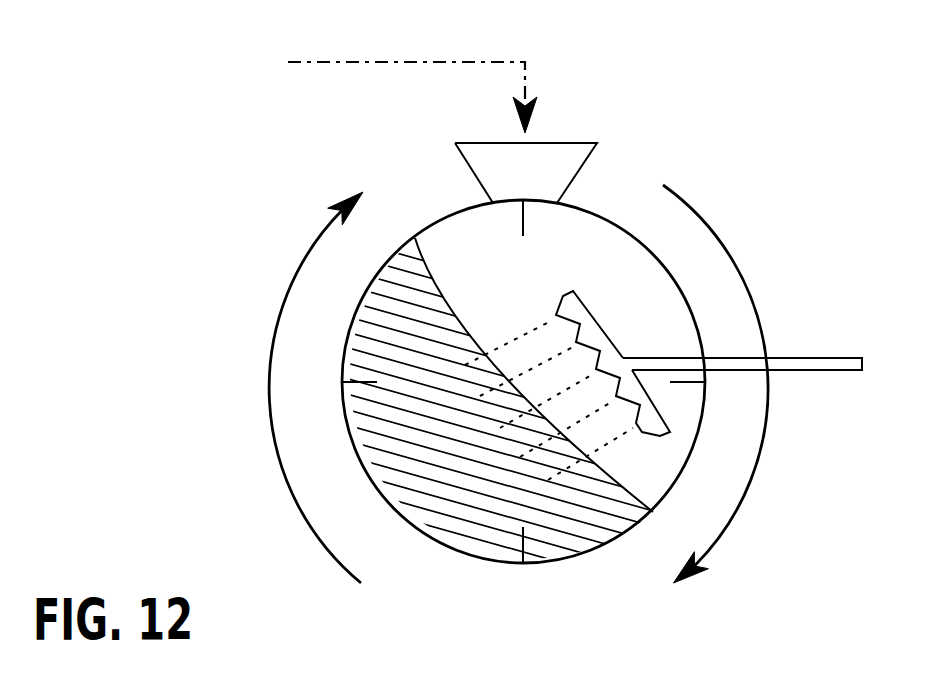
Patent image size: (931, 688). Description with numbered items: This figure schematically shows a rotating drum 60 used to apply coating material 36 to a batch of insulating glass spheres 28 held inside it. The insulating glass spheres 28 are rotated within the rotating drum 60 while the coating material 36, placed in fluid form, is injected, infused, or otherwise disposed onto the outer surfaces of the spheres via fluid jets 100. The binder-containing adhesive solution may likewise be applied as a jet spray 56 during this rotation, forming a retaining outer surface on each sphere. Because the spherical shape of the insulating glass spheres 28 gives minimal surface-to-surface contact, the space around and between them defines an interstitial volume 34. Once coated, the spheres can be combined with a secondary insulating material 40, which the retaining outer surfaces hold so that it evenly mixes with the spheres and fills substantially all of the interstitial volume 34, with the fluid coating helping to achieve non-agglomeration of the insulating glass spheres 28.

The insulating glass spheres 28 is at (372, 423).
The interstitial volume 34 is at (458, 500).
The coating material 36 is at (528, 333).
The secondary insulating material 40 is at (432, 62).
The jet spray 56 is at (625, 455).
The rotating drum 60 is at (483, 562).
The fluid jets 100 is at (572, 312).